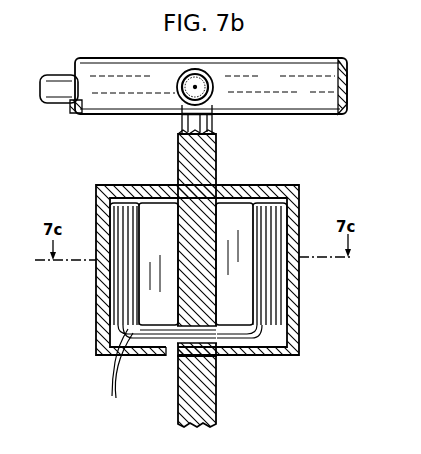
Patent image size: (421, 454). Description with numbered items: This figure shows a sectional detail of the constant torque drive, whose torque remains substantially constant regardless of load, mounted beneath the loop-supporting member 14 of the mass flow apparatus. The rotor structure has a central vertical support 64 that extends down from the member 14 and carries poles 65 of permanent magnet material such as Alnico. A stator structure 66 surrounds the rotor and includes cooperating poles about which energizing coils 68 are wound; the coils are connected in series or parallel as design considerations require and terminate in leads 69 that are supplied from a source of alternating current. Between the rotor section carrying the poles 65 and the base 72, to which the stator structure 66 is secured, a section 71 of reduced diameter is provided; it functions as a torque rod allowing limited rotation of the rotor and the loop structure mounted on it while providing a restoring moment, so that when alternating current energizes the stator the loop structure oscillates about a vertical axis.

The handle tube 14 is at (137, 62).
The central vertical support 64 is at (214, 188).
The poles 65 is at (166, 234).
The stator structure 66 is at (298, 216).
The energizing coils 68 is at (115, 303).
The leads 69 is at (115, 375).
The section of reduced diameter 71 is at (185, 344).
The base 72 is at (184, 394).